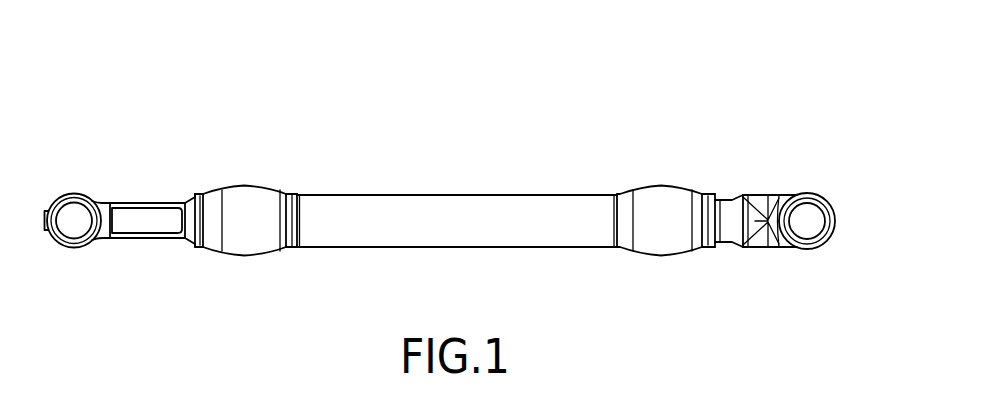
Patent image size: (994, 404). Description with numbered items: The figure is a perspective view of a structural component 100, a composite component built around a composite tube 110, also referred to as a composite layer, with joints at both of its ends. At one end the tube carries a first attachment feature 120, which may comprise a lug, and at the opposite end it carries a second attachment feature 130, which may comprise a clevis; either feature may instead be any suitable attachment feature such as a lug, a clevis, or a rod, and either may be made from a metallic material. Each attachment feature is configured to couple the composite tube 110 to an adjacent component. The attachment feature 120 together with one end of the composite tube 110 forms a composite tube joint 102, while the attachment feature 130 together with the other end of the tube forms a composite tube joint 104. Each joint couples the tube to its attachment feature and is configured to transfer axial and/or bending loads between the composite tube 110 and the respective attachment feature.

The structural component 100 is at (672, 71).
The composite tube joint 102 is at (206, 158).
The composite tube joint 104 is at (707, 173).
The composite tube 110 is at (368, 194).
The attachment feature 120 is at (113, 203).
The attachment feature 130 is at (758, 196).